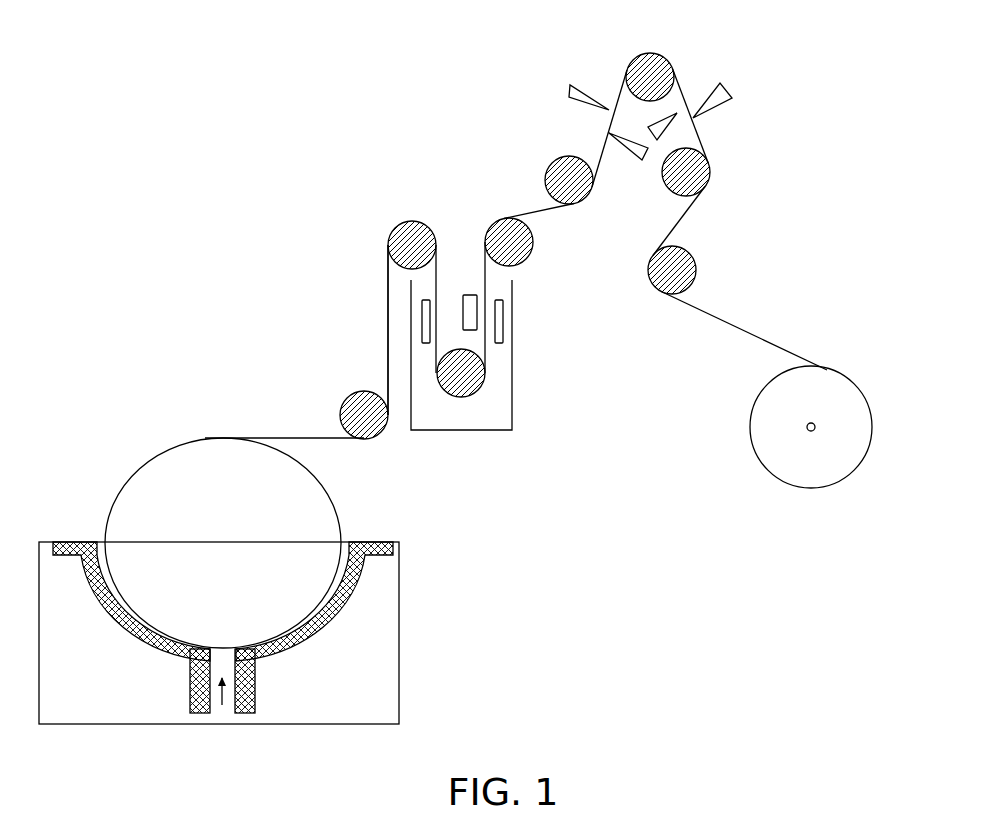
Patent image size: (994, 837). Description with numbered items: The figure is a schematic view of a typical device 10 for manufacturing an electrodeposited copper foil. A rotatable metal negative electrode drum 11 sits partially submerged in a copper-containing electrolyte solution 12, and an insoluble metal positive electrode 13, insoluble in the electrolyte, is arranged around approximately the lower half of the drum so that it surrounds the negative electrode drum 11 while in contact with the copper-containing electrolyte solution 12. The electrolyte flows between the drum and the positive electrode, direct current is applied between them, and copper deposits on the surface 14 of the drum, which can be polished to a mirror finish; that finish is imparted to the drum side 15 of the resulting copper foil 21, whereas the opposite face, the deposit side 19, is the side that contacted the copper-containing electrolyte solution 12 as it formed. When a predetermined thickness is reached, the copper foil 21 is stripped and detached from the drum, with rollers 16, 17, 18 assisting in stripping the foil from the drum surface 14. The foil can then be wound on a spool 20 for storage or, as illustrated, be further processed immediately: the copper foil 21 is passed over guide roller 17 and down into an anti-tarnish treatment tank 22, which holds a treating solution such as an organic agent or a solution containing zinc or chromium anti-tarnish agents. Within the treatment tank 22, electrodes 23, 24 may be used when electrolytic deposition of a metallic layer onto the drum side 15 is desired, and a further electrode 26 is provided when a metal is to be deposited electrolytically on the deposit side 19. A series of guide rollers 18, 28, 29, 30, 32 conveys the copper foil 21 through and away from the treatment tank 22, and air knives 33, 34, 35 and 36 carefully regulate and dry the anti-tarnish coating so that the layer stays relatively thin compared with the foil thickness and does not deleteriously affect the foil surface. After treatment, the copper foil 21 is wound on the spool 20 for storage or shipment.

The device 10 is at (80, 345).
The rotatable metal negative electrode drum 11 is at (215, 452).
The copper-containing electrolyte solution 12 is at (235, 660).
The insoluble metal positive electrode 13 is at (70, 542).
The surface of the negative electrode drum 14 is at (340, 535).
The drum side of copper foil 15 is at (330, 440).
The roller 16 is at (375, 433).
The guide roller 17 is at (412, 221).
The guide roller 18 is at (535, 240).
The deposit side of copper foil 19 is at (387, 303).
The spool 20 is at (815, 427).
The copper foil 21 is at (387, 283).
The anti-tarnish treatment tank 22 is at (513, 395).
The electrode 23 is at (505, 317).
The electrode 24 is at (420, 323).
The further electrode 26 is at (470, 293).
The guide roller 28 is at (563, 157).
The guide roller 29 is at (652, 54).
The guide roller 30 is at (712, 172).
The guide roller 32 is at (695, 268).
The air knife 33 is at (574, 84).
The air knife 34 is at (641, 160).
The air knife 35 is at (720, 82).
The air knife 36 is at (668, 123).